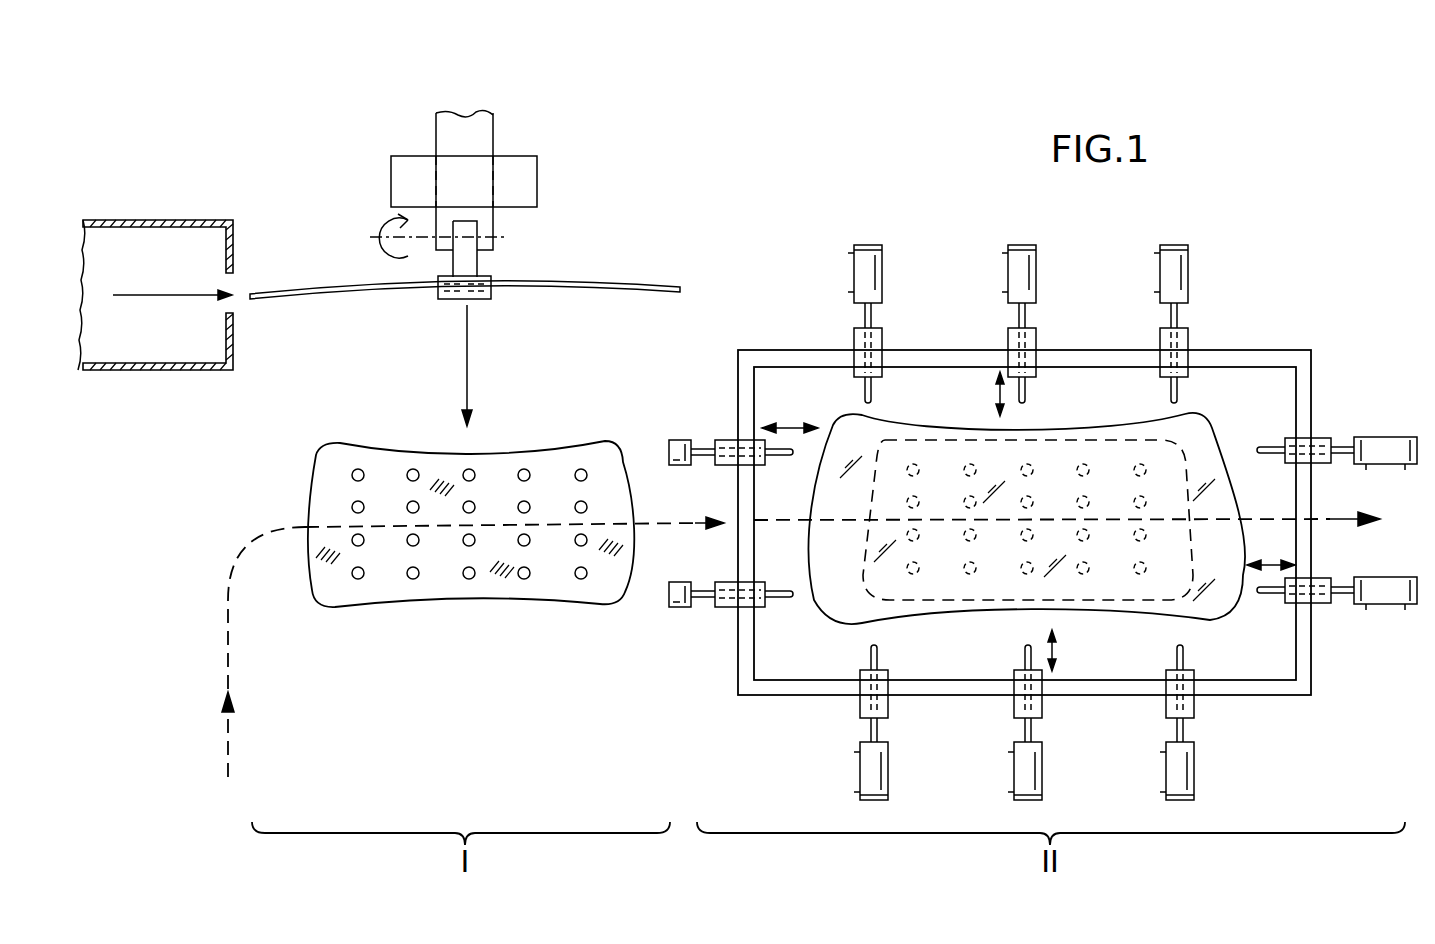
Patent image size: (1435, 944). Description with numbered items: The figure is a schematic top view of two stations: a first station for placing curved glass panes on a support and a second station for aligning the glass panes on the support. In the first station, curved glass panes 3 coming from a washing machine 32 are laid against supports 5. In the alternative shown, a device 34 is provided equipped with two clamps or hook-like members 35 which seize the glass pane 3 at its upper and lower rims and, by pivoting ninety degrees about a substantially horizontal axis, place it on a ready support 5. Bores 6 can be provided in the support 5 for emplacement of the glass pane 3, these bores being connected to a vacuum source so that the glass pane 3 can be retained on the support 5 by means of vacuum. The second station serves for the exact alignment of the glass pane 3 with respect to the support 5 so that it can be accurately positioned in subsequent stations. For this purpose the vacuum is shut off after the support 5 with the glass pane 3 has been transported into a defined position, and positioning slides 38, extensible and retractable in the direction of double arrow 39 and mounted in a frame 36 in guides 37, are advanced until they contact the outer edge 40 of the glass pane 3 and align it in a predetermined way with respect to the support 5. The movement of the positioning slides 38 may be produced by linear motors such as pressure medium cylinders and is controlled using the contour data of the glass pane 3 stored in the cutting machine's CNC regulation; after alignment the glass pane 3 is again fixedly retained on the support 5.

The curved glass pane 3 is at (600, 284).
The support 5 is at (357, 597).
The bores 6 is at (412, 468).
The washing machine 32 is at (128, 230).
The device 34 is at (553, 176).
The clamps or hook-like members 35 is at (482, 297).
The frame 36 is at (768, 688).
The guides 37 is at (860, 350).
The positioning slides 38 is at (866, 394).
The double arrow 39 is at (1000, 392).
The outer edge 40 is at (1074, 420).